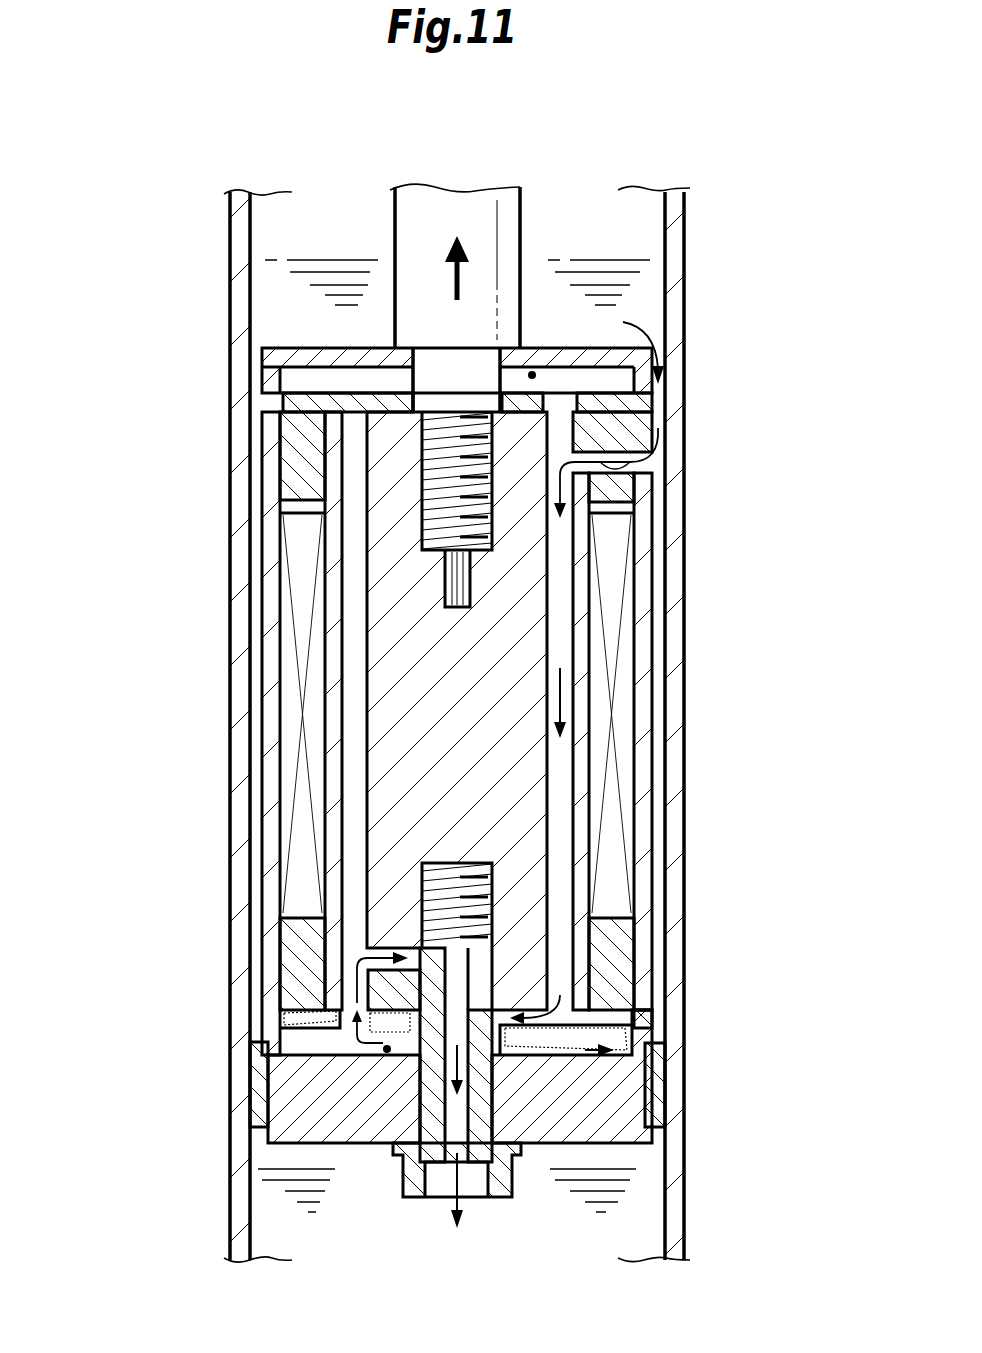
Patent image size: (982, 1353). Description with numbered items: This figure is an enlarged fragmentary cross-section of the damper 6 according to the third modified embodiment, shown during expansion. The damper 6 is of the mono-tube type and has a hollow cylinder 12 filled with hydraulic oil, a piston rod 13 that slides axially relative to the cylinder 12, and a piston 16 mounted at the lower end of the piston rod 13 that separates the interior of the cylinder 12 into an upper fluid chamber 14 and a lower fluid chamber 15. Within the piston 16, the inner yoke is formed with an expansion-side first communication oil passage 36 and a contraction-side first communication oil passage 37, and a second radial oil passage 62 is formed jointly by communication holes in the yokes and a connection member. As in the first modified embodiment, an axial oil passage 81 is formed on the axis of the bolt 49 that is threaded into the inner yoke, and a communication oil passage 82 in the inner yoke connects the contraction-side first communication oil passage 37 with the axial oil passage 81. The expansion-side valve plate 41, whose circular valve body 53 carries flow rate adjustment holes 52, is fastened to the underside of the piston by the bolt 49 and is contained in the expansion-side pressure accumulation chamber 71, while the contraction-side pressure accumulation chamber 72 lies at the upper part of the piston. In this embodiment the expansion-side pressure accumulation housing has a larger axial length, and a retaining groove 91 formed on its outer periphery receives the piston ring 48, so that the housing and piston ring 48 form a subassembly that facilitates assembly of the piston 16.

The damper 6 is at (178, 238).
The piston rod 13 is at (510, 215).
The upper fluid chamber 14 is at (629, 237).
The lower fluid chamber 15 is at (564, 1231).
The cylinder 12 is at (228, 401).
The contraction-side pressure accumulation chamber 72 is at (532, 372).
The second radial oil passage 62 is at (642, 480).
The piston 16 is at (255, 587).
The contraction-side first communication oil passage 37 is at (345, 716).
The expansion-side first communication oil passage 36 is at (575, 765).
The communication oil passage 82 is at (375, 952).
The expansion-side valve plate 41 is at (292, 1041).
The flow rate adjustment holes 52 is at (345, 1056).
The valve body 53 is at (657, 1047).
The piston ring 48 is at (660, 1092).
The retaining groove 91 is at (667, 1110).
The expansion-side pressure accumulation chamber 71 is at (387, 1052).
The bolt 49 is at (400, 1202).
The axial oil passage 81 is at (460, 1155).